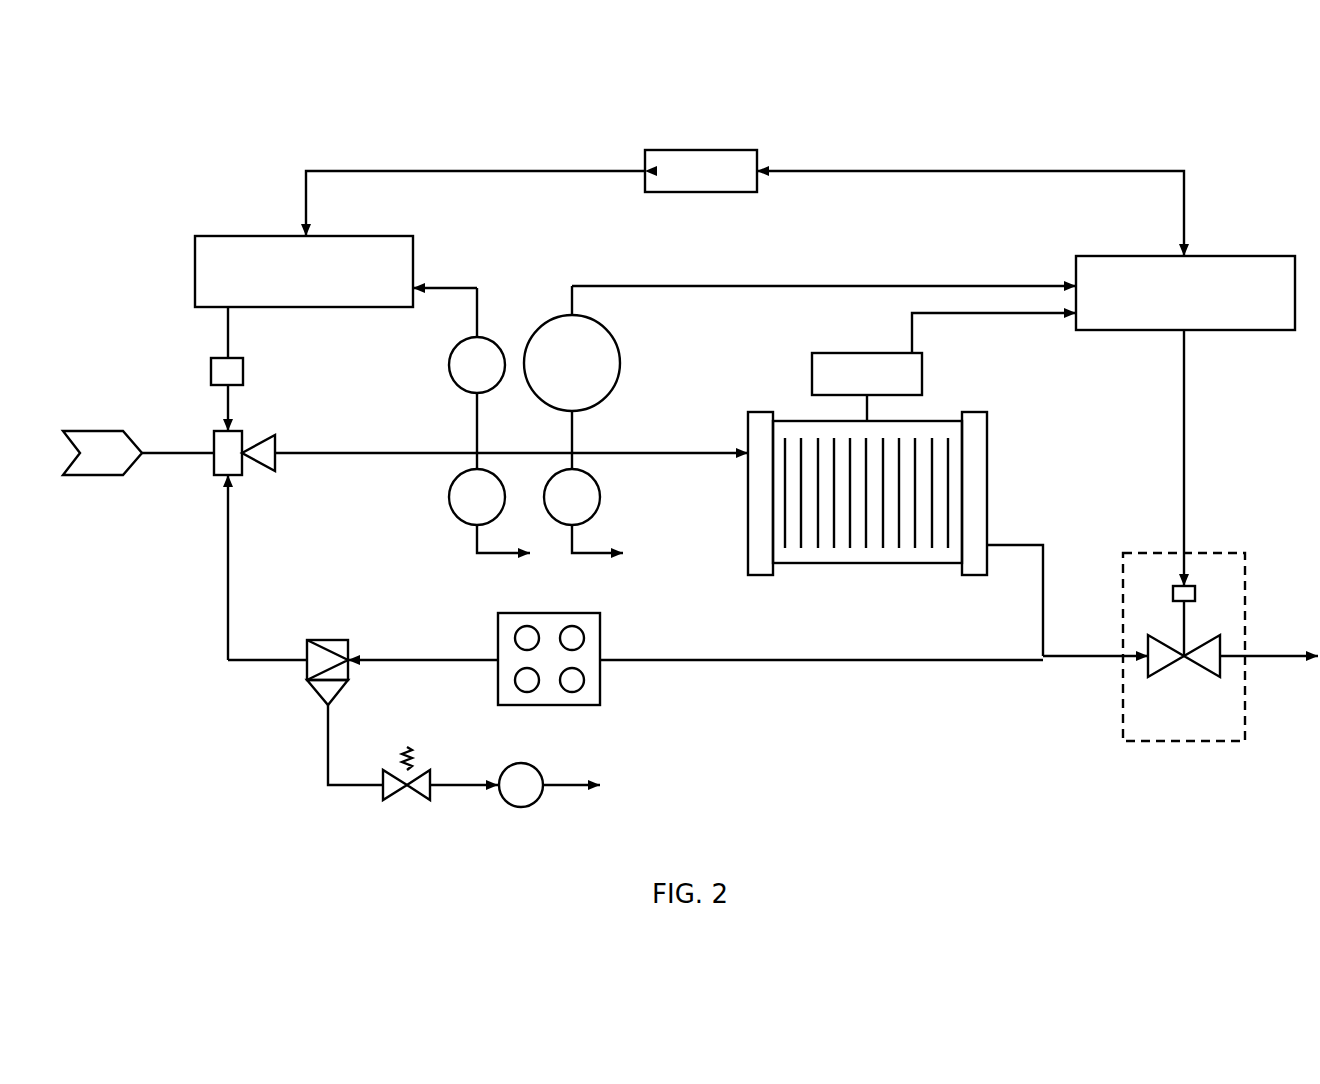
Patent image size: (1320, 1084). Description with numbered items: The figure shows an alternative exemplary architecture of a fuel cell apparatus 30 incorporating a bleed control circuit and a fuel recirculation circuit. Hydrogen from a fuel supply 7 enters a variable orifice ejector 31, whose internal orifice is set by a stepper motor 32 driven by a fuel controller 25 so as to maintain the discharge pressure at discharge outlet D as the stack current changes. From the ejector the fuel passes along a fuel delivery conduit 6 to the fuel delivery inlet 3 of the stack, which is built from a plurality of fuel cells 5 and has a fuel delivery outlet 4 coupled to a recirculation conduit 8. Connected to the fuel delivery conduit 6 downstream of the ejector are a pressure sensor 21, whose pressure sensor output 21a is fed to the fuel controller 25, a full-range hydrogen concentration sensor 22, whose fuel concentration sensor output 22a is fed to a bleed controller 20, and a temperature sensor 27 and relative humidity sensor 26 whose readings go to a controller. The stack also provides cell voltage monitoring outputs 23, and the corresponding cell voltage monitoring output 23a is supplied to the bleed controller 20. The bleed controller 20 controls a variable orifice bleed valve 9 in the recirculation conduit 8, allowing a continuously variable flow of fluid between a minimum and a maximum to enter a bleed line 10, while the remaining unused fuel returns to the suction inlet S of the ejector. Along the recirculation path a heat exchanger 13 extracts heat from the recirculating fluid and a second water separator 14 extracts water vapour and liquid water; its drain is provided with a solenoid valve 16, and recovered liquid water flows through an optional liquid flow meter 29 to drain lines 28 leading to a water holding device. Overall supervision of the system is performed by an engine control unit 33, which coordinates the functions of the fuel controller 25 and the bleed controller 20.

The fuel cell apparatus 30 is at (155, 218).
The fuel controller 25 is at (195, 278).
The stepper motor 32 is at (211, 372).
The variable orifice ejector 31 is at (214, 440).
The fuel supply 7 is at (100, 478).
The fuel delivery conduit 6 is at (683, 455).
The pressure sensor 21 is at (450, 366).
The pressure sensor output 21a is at (479, 303).
The temperature sensor 27 is at (449, 498).
The fuel concentration sensor 22 is at (620, 366).
The fuel concentration sensor output 22a is at (1020, 286).
The relative humidity sensor 26 is at (600, 498).
The engine control unit 33 is at (700, 193).
The cell voltage monitoring outputs 23 is at (855, 353).
The cell voltage monitoring output 23a is at (1003, 315).
The bleed controller 20 is at (1245, 256).
The fuel delivery inlet 3 is at (849, 505).
The fuel cells 5 is at (830, 542).
The fuel delivery outlet 4 is at (990, 545).
The recirculation conduit 8 is at (950, 661).
The variable orifice bleed valve 9 is at (1205, 669).
The bleed line 10 is at (1278, 659).
The heat exchanger 13 is at (553, 706).
The second water separator 14 is at (330, 640).
The solenoid valve 16 is at (397, 803).
The liquid flow meter 29 is at (520, 808).
The drain lines 28 is at (558, 791).